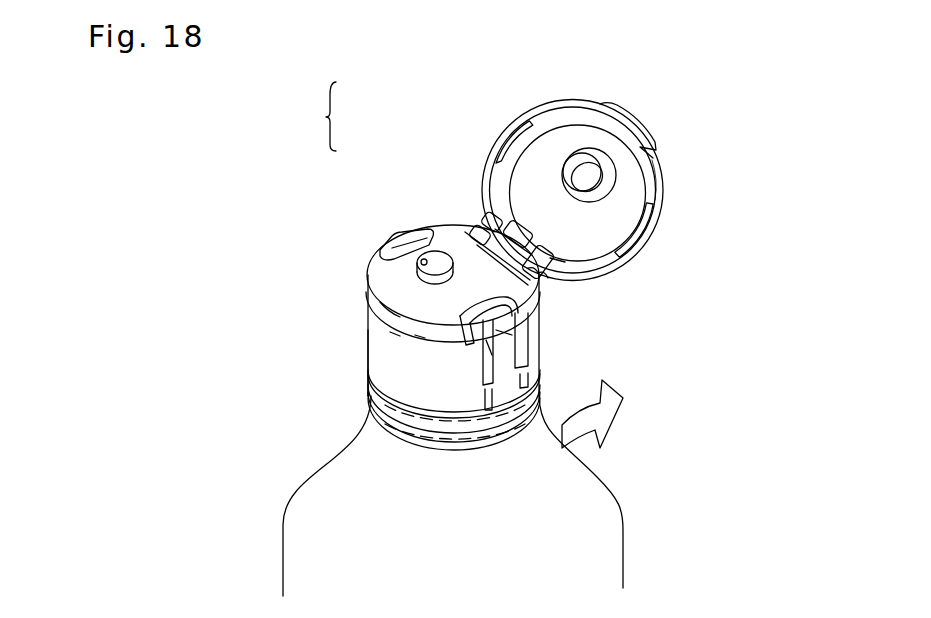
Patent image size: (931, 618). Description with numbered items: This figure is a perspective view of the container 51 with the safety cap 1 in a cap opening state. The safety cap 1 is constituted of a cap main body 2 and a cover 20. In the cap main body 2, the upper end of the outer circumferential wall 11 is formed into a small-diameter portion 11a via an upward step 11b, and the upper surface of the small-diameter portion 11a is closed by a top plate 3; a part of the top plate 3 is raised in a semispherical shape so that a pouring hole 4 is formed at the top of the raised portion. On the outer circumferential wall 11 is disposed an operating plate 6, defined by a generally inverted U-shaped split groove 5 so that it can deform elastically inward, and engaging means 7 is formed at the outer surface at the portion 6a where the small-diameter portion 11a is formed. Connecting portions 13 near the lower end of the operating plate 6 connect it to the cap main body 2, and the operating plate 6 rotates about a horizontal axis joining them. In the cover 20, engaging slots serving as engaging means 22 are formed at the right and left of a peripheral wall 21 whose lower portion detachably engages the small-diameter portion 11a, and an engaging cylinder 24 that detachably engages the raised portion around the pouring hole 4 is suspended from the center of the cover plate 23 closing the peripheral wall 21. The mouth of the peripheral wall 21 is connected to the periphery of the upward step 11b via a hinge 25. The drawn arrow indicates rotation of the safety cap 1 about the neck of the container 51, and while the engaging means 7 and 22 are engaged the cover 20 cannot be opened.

The safety cap 1 is at (321, 116).
The cap main body 2 is at (403, 215).
The top plate 3 is at (388, 268).
The pouring hole 4 is at (437, 257).
The split groove 5 is at (527, 337).
The operating plate 6 is at (510, 358).
The portion at which the small-diameter portion is formed 6a is at (482, 338).
The engaging means 7 is at (522, 322).
The outer circumferential wall 11 is at (373, 333).
The small-diameter portion 11a is at (422, 328).
The upward step 11b is at (397, 328).
The connecting portion 13 is at (488, 410).
The cover 20 is at (492, 130).
The peripheral wall 21 is at (657, 192).
The engaging means (engaging slots) 22 is at (630, 250).
The cover plate 23 is at (620, 192).
The engaging cylinder 24 is at (583, 148).
The hinge 25 is at (475, 217).
The container 51 is at (650, 527).